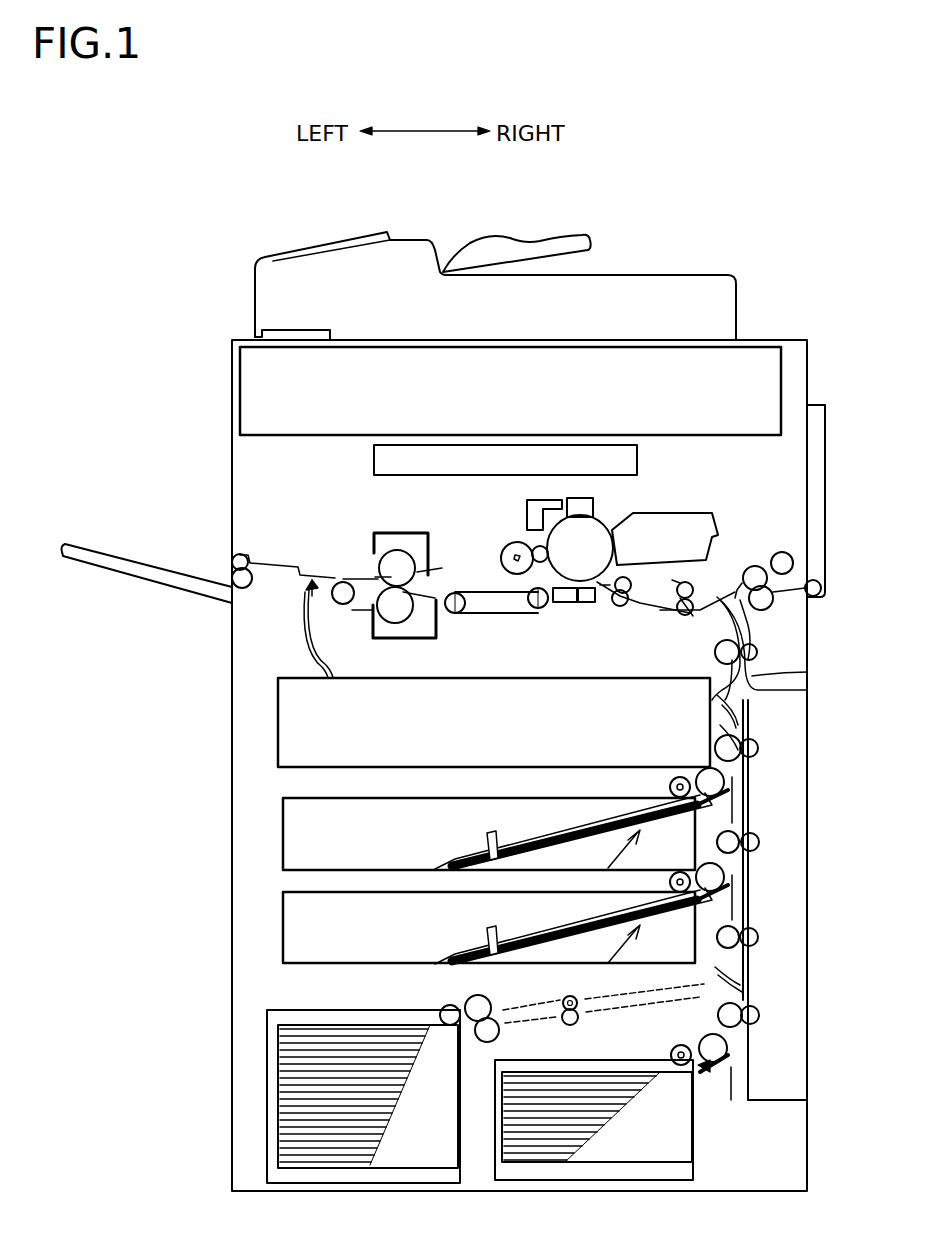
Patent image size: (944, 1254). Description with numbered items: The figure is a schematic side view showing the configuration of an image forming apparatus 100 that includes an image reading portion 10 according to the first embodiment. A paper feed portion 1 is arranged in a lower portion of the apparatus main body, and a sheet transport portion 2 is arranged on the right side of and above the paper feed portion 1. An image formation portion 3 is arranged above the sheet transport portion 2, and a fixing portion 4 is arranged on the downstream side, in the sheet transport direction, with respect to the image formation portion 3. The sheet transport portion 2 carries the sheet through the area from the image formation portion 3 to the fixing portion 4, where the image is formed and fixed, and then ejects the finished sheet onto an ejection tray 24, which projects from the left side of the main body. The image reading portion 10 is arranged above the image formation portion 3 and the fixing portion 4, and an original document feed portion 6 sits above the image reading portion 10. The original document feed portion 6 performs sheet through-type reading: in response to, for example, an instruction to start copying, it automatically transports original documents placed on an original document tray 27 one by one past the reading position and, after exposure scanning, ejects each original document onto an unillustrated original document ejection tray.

The image forming apparatus 100 is at (295, 213).
The paper feed portion 1 is at (272, 948).
The sheet transport portion 2 is at (766, 646).
The image formation portion 3 is at (612, 502).
The fixing portion 4 is at (352, 549).
The original document feed portion 6 is at (247, 289).
The image reading portion 10 is at (282, 381).
The ejection tray 24 is at (113, 571).
The original document tray 27 is at (503, 238).